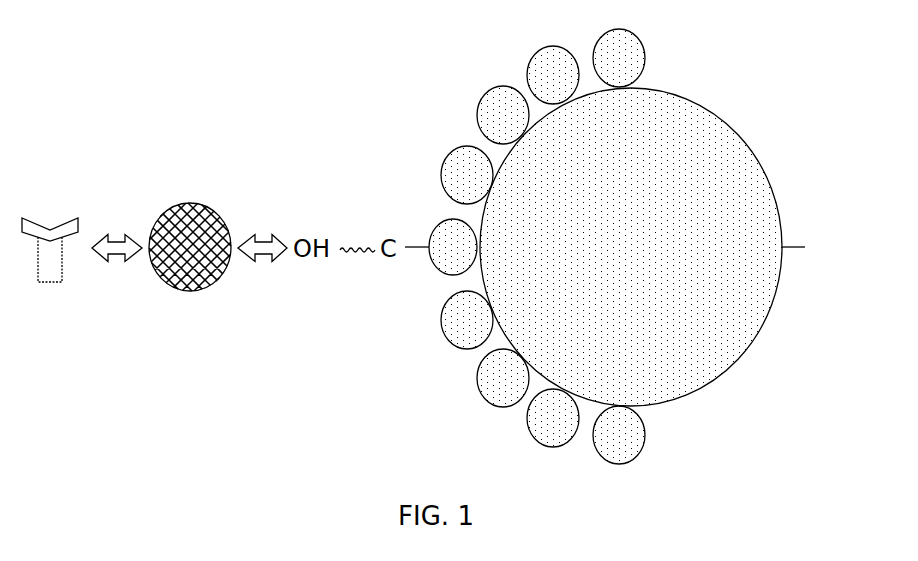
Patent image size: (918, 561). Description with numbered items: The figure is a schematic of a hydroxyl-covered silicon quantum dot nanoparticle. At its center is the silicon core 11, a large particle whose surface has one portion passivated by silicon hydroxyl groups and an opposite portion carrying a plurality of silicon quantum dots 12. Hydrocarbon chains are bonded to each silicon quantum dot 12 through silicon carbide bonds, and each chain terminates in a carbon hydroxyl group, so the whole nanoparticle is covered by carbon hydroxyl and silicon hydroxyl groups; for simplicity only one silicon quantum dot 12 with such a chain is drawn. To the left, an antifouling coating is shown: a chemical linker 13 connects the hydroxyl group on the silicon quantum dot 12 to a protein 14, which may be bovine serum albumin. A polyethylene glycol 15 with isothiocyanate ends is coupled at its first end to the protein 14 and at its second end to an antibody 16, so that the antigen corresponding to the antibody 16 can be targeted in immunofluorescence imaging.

The silicon core 11 is at (500, 157).
The silicon quantum dot 12 is at (437, 228).
The chemical linker 13 is at (260, 238).
The protein 14 is at (201, 207).
The polyethylene glycol 15 is at (117, 242).
The antibody 16 is at (67, 227).